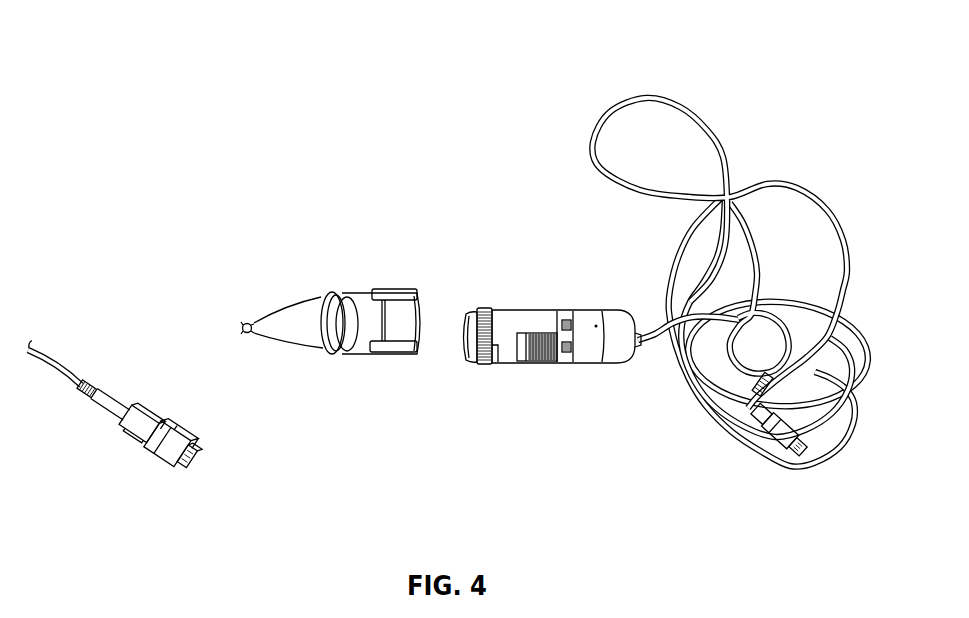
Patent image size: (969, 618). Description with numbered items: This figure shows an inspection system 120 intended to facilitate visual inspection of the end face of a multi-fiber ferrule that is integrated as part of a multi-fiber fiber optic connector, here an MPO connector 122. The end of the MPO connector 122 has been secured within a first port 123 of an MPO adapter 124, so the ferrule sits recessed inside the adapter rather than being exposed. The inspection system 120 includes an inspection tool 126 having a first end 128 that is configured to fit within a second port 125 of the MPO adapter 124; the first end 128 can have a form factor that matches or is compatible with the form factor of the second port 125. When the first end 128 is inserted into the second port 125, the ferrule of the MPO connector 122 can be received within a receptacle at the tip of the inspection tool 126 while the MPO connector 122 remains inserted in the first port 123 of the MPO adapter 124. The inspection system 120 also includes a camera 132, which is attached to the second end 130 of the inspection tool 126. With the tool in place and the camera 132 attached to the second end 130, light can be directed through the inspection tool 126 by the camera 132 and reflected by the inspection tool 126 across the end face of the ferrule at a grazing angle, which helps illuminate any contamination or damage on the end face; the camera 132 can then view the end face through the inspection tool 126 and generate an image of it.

The inspection system 120 is at (118, 56).
The MPO connector 122 is at (144, 420).
The first port 123 is at (135, 440).
The MPO adapter 124 is at (167, 437).
The second port 125 is at (189, 446).
The inspection tool 126 is at (327, 292).
The first end 128 is at (251, 323).
The second end 130 is at (413, 292).
The camera 132 is at (528, 318).